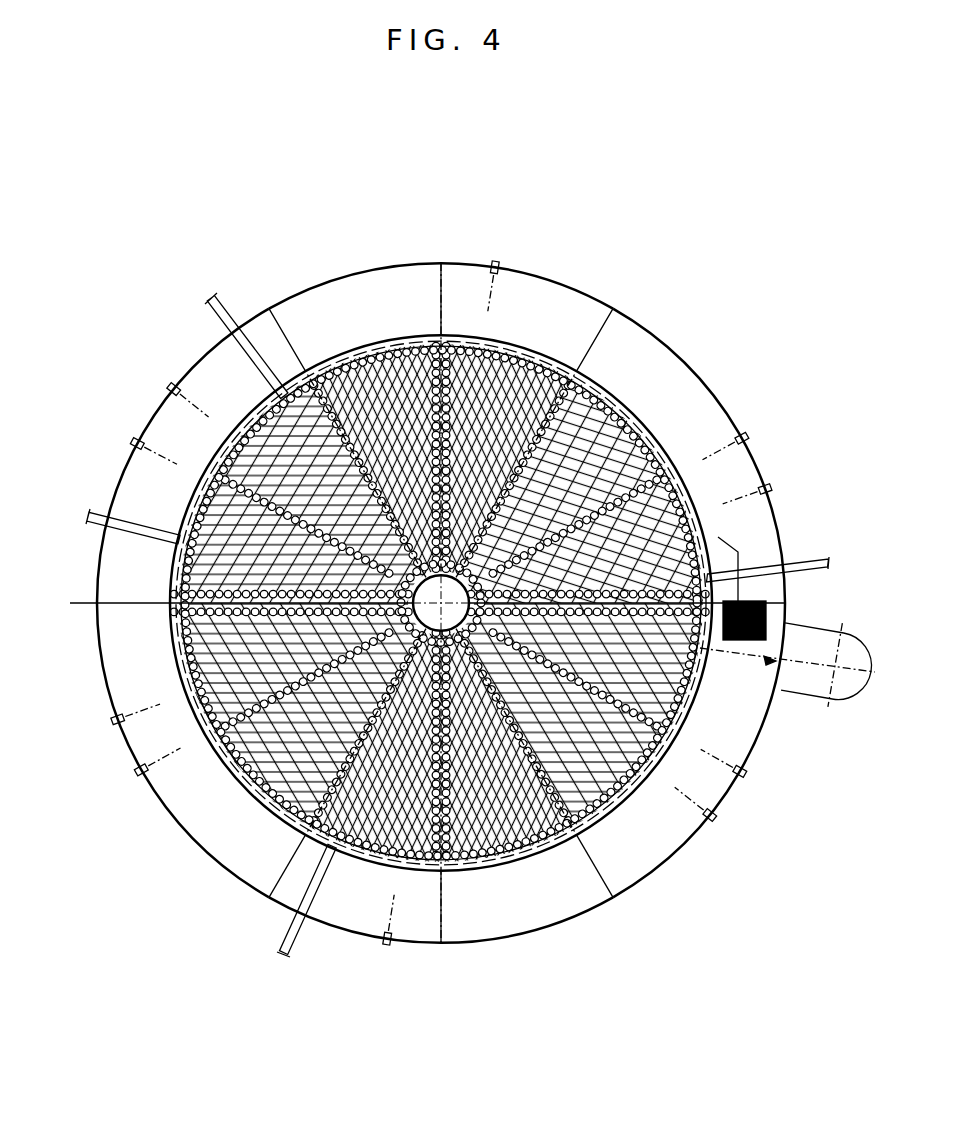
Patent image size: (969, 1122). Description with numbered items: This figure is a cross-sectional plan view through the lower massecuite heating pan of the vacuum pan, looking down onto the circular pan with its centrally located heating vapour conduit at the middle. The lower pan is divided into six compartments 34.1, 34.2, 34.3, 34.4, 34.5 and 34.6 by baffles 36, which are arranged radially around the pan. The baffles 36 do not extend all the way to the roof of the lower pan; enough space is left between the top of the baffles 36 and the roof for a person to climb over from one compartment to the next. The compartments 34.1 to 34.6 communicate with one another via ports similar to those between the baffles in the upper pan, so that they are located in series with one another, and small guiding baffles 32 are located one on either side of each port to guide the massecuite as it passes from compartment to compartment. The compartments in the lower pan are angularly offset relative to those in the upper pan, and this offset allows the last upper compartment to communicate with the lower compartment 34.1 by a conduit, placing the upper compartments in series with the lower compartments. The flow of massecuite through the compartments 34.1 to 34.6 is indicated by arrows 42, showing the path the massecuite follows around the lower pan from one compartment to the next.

The guiding baffles 32 is at (172, 575).
The compartment 34.1 is at (673, 403).
The compartment 34.2 is at (458, 282).
The compartment 34.3 is at (130, 505).
The compartment 34.4 is at (233, 833).
The compartment 34.5 is at (515, 913).
The compartment 34.6 is at (653, 835).
The baffles 36 is at (290, 348).
The arrows 42 is at (547, 357).